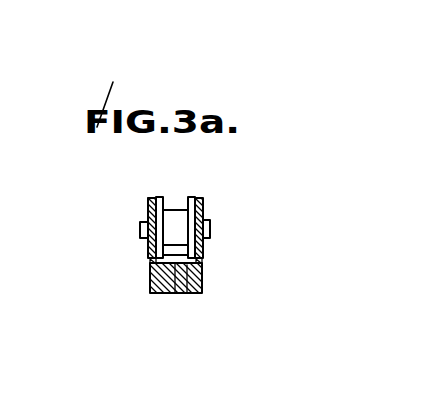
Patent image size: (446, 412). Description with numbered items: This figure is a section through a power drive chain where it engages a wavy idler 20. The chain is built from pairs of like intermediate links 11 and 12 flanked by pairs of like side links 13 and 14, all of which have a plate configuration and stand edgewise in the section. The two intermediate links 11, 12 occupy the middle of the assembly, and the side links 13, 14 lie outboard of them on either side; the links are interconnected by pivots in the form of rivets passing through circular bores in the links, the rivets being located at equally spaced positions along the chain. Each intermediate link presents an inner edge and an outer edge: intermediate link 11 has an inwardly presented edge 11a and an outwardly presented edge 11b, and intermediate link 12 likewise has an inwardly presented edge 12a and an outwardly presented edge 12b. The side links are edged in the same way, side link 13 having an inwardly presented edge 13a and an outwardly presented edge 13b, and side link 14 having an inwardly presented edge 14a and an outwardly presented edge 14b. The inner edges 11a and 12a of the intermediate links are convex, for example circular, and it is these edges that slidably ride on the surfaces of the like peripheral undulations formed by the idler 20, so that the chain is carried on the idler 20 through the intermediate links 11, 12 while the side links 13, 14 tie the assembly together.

The intermediate link 11 is at (181, 199).
The intermediate link edge 11a is at (150, 278).
The intermediate link edge 11b is at (158, 197).
The intermediate link 12 is at (188, 225).
The intermediate link edge 12a is at (187, 293).
The intermediate link edge 12b is at (190, 200).
The side link 13 is at (140, 230).
The side link edge 13a is at (148, 256).
The side link edge 13b is at (148, 205).
The side link 14 is at (203, 250).
The side link edge 14a is at (199, 256).
The side link edge 14b is at (201, 200).
The idler 20 is at (158, 293).